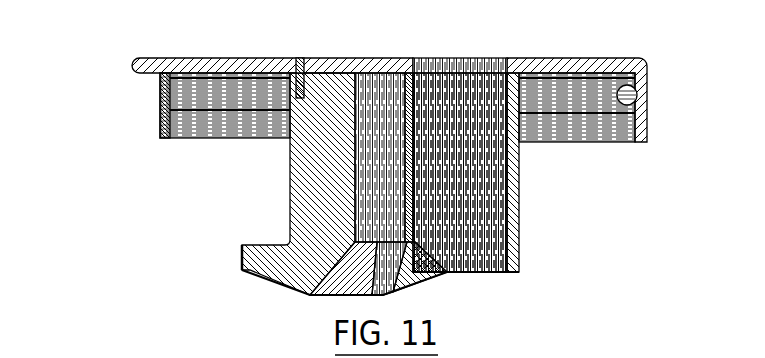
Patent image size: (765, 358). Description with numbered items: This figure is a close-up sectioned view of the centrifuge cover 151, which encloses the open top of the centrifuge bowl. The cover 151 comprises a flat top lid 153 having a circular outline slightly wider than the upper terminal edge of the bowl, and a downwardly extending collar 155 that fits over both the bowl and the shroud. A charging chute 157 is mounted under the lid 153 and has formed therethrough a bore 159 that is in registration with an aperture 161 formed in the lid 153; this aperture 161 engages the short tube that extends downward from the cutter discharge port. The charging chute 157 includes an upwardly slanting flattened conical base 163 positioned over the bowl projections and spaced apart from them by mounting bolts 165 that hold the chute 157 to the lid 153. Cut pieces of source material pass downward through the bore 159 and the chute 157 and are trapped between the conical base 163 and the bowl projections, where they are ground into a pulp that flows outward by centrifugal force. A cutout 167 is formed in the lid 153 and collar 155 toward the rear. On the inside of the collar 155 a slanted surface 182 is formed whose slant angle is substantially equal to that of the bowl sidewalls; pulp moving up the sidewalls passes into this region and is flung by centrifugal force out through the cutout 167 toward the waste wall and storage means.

The centrifuge cover 151 is at (153, 58).
The flat top lid 153 is at (567, 71).
The collar 155 is at (647, 118).
The charging chute 157 is at (519, 190).
The bore 159 is at (468, 177).
The aperture 161 is at (500, 60).
The flattened conical base 163 is at (280, 280).
The mounting bolts 165 is at (298, 58).
The cutout 167 is at (148, 98).
The slanted surface 182 is at (632, 83).